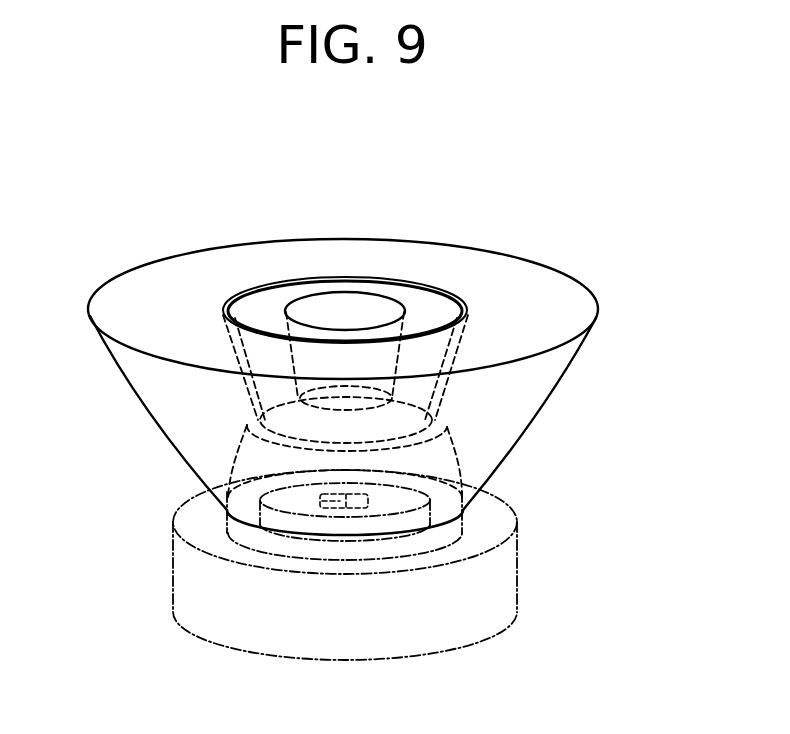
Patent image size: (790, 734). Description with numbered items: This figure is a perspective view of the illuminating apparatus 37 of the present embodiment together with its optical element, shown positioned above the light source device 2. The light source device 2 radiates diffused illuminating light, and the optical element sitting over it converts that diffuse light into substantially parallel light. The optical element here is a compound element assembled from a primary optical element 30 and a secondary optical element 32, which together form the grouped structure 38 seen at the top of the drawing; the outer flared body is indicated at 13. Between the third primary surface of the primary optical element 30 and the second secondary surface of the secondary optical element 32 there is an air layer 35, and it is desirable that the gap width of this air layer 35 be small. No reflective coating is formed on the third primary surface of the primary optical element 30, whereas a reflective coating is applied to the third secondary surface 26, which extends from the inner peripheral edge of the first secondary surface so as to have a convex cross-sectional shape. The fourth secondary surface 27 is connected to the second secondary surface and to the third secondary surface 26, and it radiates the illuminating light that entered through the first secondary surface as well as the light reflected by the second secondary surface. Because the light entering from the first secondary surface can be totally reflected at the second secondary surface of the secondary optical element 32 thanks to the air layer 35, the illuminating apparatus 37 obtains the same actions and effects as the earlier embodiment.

The light source device 2 is at (562, 559).
The flange portion 13 is at (563, 292).
The secondary surface-3 26 is at (345, 308).
The secondary surface-4 27 is at (428, 310).
The primary optical element 30 is at (165, 288).
The secondary optical element 32 is at (262, 303).
The air layer 35 is at (467, 317).
The illuminating apparatus 37 is at (588, 167).
The light emitting surface 38 is at (133, 163).